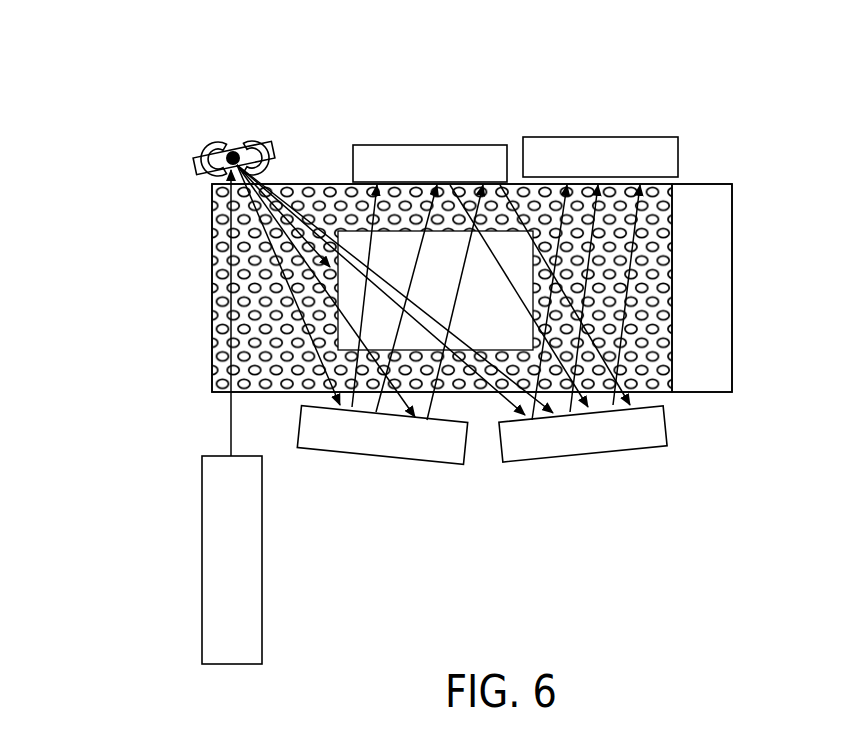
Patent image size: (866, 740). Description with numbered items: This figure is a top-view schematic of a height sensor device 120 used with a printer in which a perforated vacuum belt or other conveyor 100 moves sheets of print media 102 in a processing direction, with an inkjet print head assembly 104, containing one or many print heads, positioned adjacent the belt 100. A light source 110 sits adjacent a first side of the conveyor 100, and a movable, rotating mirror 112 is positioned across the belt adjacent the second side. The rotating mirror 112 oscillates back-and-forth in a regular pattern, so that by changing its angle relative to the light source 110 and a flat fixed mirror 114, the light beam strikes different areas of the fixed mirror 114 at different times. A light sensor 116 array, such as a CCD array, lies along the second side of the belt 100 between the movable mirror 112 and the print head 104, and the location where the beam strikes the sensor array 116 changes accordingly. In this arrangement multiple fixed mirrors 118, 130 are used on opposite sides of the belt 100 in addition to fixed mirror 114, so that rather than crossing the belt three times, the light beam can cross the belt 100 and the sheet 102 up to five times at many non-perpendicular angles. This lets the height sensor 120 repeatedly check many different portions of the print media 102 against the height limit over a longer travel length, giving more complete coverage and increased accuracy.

The conveyor 100 is at (212, 305).
The print media 102 is at (343, 186).
The print head 104 is at (694, 184).
The light source 110 is at (202, 485).
The movable mirror 112 is at (238, 148).
The fixed mirror 114 is at (376, 456).
The light sensor 116 is at (575, 137).
The fixed mirror 118 is at (403, 145).
The height sensor device 120 is at (168, 90).
The fixed mirror 130 is at (580, 455).